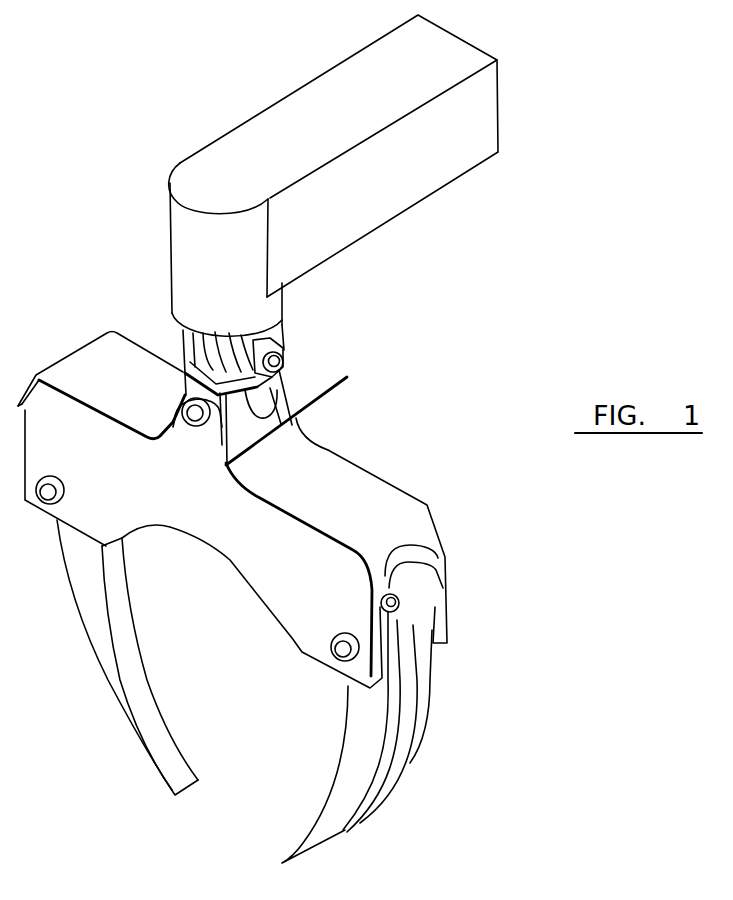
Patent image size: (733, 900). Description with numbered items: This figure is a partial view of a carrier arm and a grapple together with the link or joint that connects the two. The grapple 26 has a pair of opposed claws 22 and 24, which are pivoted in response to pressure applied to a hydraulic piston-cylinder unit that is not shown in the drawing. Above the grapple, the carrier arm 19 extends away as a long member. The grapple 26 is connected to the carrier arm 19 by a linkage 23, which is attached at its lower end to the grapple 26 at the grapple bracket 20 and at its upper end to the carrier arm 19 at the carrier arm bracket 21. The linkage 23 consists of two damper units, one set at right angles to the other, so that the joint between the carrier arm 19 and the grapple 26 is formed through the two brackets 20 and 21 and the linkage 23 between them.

The carrier arm 19 is at (352, 252).
The grapple bracket 20 is at (297, 413).
The carrier arm bracket 21 is at (283, 330).
The claw 22 is at (140, 680).
The linkage 23 is at (288, 377).
The claw 24 is at (397, 753).
The grapple 26 is at (385, 493).